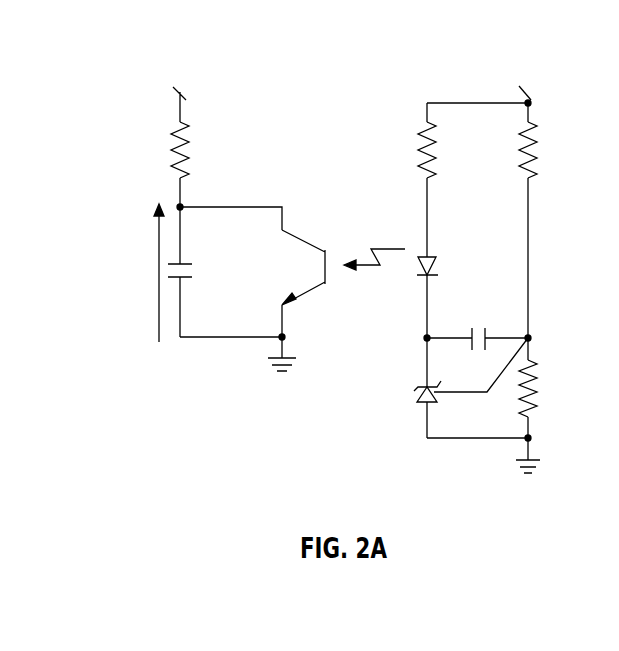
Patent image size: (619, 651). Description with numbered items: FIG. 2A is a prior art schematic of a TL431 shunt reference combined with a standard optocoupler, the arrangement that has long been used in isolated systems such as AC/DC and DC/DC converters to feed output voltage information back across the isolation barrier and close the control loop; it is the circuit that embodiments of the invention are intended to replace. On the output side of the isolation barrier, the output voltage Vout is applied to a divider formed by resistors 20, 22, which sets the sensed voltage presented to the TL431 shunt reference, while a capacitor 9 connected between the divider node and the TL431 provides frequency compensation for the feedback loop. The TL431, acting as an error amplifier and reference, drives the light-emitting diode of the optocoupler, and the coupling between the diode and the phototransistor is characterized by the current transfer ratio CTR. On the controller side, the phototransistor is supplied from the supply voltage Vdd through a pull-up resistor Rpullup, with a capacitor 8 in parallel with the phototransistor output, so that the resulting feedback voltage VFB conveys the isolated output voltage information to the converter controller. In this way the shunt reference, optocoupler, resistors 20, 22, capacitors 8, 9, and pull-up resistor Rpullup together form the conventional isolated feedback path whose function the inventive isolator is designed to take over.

The resistor R20 20 is at (450, 140).
The resistor R22 22 is at (548, 140).
The capacitor C8 8 is at (195, 272).
The capacitor C9 9 is at (477, 323).
The pull-up resistor Rpullup is at (216, 150).
The supply voltage Vdd is at (177, 89).
The output voltage Vout is at (525, 79).
The feedback voltage VFB is at (124, 273).
The current transfer ratio CTR is at (374, 241).